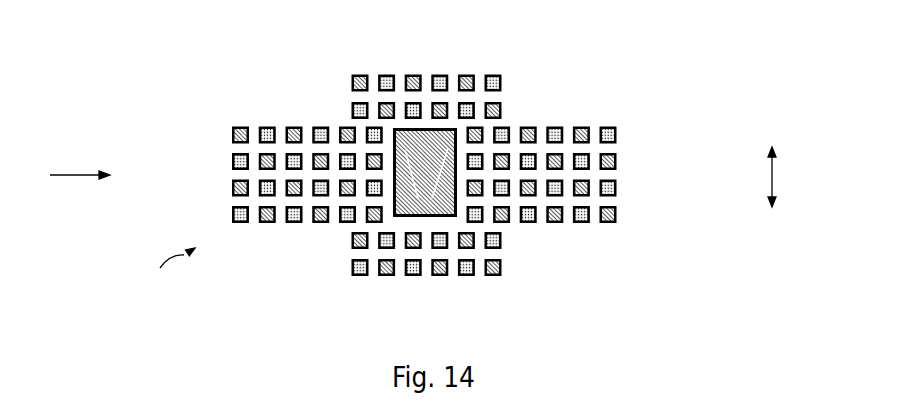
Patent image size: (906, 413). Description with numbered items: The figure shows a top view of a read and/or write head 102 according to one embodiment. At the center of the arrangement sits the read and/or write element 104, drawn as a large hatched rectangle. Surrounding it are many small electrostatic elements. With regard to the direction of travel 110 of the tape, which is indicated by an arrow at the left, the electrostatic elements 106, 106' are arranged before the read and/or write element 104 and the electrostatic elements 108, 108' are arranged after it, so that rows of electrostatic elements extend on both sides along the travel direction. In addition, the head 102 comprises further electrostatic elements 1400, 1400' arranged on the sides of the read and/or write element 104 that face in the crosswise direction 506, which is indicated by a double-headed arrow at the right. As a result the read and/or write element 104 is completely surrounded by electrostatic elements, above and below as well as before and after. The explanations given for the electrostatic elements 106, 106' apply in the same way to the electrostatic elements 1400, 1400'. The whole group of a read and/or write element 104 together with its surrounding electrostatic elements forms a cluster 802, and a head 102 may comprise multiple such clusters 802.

The head 102 is at (662, 104).
The read and/or write element 104 is at (398, 128).
The electrostatic element 106 is at (334, 112).
The electrostatic element 106' is at (294, 112).
The electrostatic element 108 is at (529, 237).
The electrostatic element 108' is at (580, 237).
The electrostatic element 1400 is at (462, 54).
The electrostatic element 1400' is at (397, 57).
The direction of travel 110 is at (53, 176).
The crosswise direction 506 is at (772, 177).
The cluster 802 is at (161, 271).